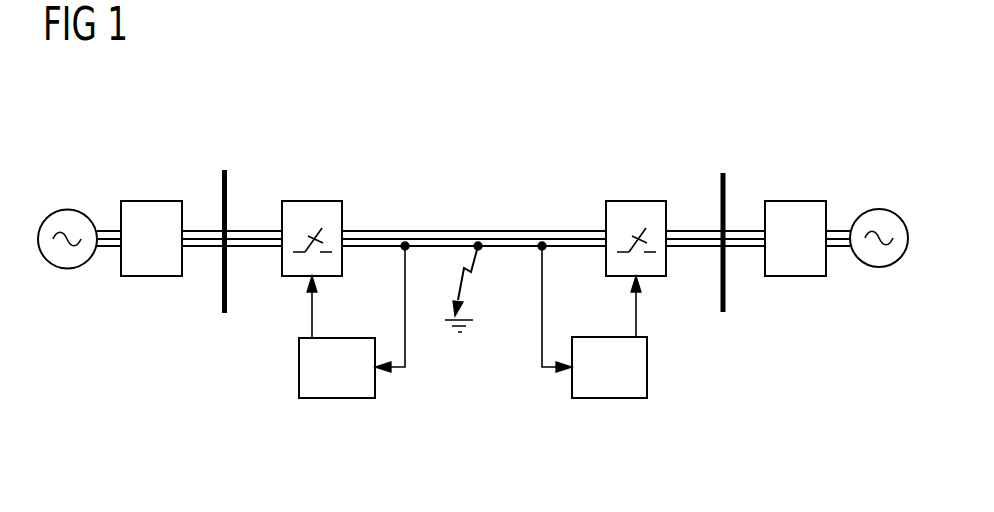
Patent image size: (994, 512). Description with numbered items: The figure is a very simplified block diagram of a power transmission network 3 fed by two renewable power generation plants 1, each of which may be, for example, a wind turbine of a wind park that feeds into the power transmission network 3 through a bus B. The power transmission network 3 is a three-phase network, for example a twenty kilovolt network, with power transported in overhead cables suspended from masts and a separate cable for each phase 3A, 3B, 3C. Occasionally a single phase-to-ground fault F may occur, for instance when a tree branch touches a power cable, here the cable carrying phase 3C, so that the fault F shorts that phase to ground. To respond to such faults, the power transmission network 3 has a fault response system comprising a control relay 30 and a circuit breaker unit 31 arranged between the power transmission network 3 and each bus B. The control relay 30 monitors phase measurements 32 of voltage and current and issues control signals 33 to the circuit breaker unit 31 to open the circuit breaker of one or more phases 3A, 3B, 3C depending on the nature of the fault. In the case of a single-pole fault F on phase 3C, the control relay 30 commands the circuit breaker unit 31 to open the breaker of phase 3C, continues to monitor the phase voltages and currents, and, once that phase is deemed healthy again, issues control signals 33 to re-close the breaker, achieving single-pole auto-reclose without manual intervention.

The renewable power generation plant 1 is at (91, 168).
The power transmission network 3 is at (473, 154).
The phase 3A is at (390, 230).
The phase 3B is at (437, 238).
The phase 3C is at (485, 243).
The bus B is at (224, 171).
The circuit breaker unit 31 is at (310, 200).
The control relay 30 is at (299, 365).
The phase measurements 32 is at (540, 352).
The control signals 33 is at (311, 313).
The single phase-to-ground fault F is at (468, 283).